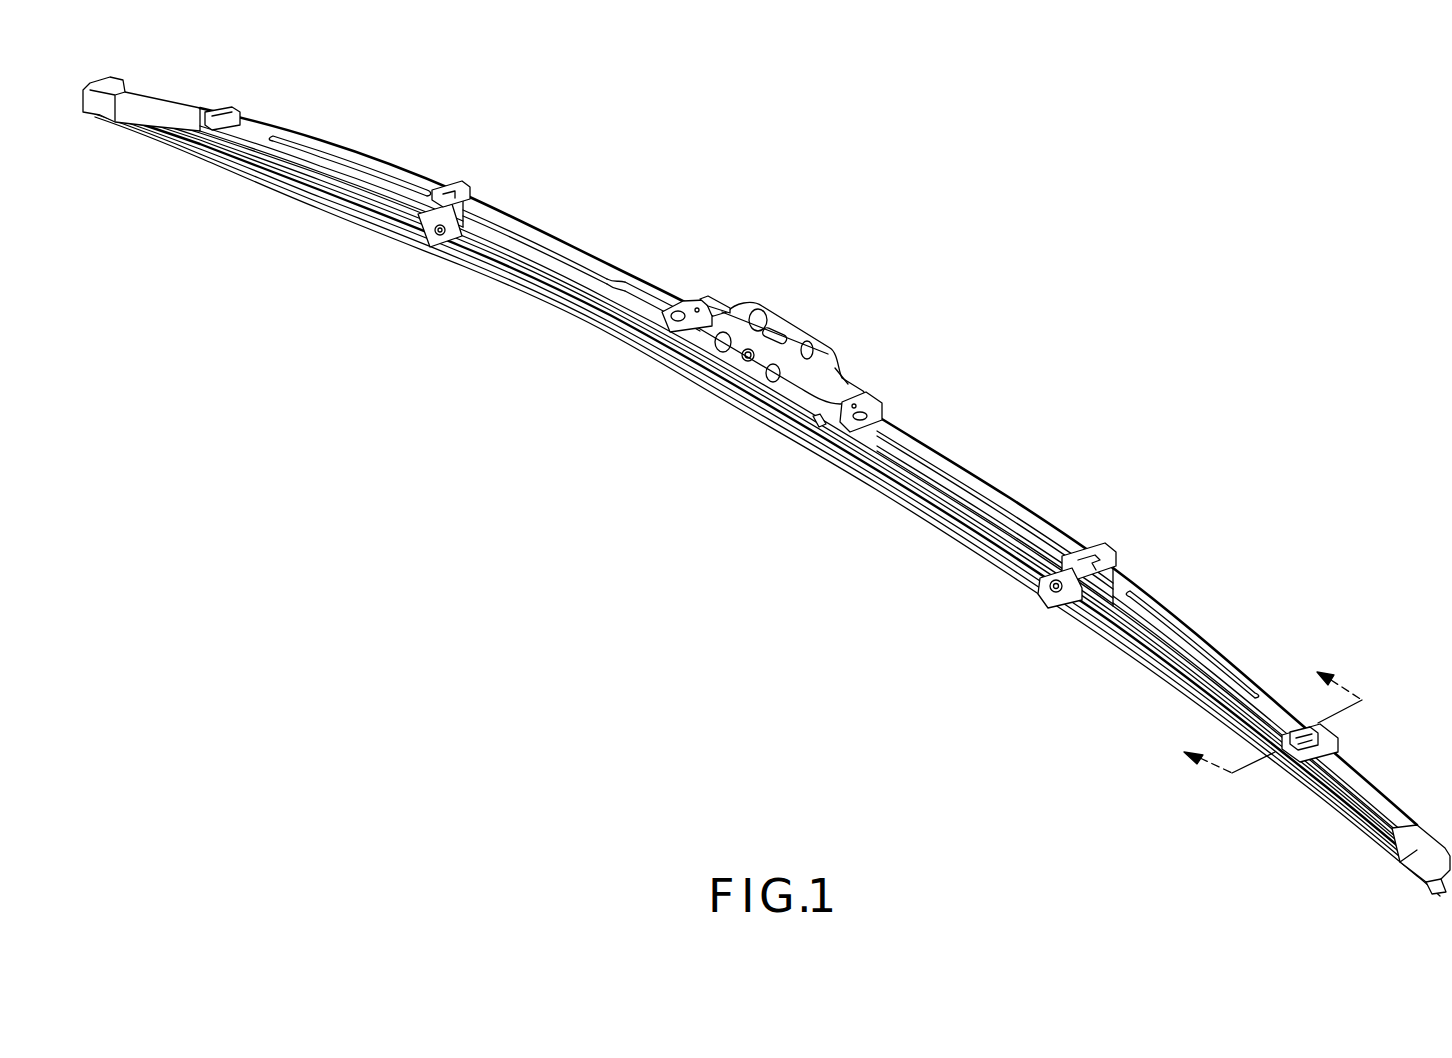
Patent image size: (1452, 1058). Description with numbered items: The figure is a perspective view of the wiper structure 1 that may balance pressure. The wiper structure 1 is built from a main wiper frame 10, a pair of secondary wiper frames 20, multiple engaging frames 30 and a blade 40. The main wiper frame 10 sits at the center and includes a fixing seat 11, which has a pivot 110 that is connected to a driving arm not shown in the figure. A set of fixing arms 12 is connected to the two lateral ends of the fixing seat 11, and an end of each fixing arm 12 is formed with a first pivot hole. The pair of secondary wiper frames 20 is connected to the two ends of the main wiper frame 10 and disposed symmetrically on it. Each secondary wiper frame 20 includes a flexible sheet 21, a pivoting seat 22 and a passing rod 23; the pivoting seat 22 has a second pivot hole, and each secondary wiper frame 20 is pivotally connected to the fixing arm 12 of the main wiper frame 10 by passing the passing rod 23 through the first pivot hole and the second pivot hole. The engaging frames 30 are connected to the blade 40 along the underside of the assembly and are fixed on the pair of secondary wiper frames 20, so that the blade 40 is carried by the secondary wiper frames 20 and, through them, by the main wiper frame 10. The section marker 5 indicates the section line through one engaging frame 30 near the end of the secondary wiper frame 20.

The wiper structure 1 is at (777, 64).
The main wiper frame 10 is at (938, 430).
The fixing seat 11 is at (832, 345).
The pivot 110 is at (775, 330).
The fixing arm 12 is at (1003, 508).
The secondary wiper frame 20 is at (352, 135).
The flexible sheet 21 is at (1228, 662).
The pivoting seat 22 is at (1100, 562).
The passing rod 23 is at (1055, 588).
The engaging frame 30 is at (188, 96).
The blade 40 is at (933, 530).
The section line 5- 5 is at (1264, 713).